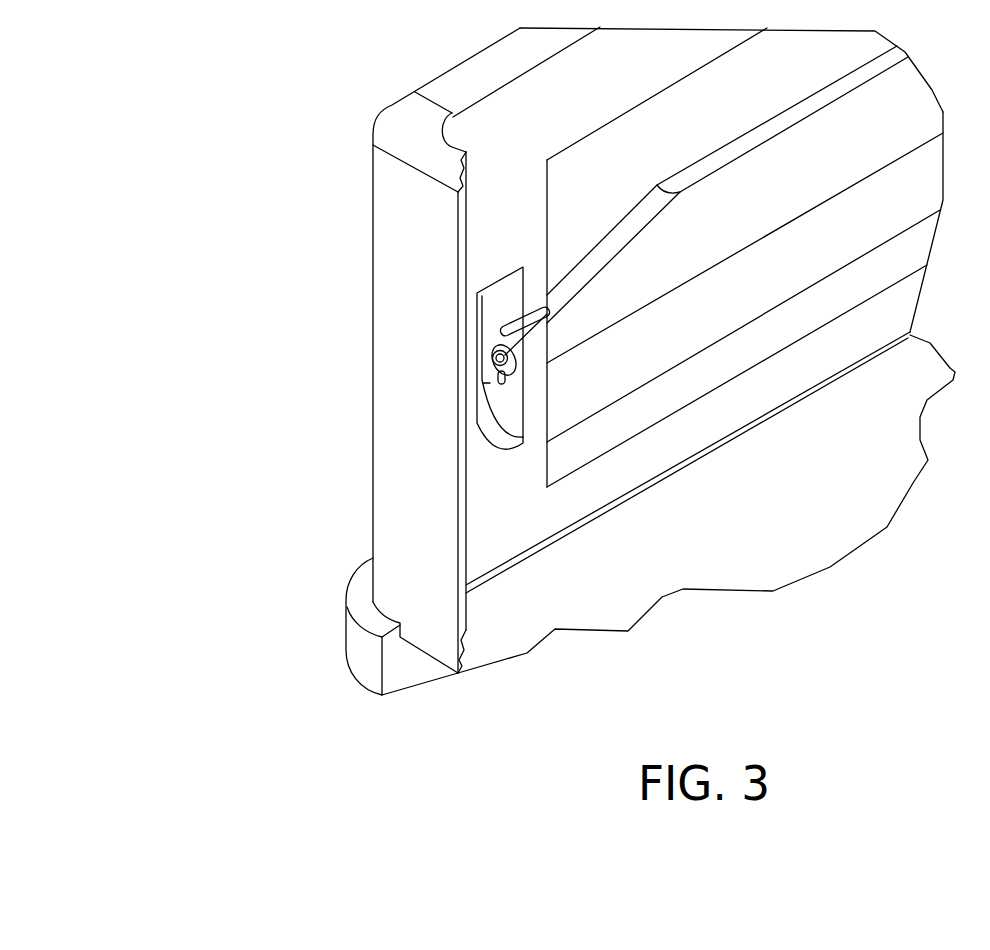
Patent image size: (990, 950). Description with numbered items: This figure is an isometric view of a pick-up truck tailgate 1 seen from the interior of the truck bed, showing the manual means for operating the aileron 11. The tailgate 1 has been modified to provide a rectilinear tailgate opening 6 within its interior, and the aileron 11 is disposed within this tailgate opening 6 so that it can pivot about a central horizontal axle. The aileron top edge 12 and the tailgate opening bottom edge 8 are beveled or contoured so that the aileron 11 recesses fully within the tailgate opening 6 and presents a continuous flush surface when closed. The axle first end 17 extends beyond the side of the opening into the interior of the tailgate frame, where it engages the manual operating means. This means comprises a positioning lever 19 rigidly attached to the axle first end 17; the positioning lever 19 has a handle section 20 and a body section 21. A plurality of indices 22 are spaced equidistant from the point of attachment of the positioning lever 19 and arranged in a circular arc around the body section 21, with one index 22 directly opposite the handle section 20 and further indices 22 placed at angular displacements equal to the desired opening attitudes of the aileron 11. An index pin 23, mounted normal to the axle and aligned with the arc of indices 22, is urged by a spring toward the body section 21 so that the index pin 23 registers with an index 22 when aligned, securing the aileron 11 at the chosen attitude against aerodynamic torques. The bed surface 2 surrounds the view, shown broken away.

The tailgate 1 is at (503, 175).
The base plate 2 is at (856, 507).
The tailgate opening 6 is at (694, 145).
The tailgate opening bottom edge 8 is at (613, 427).
The aileron 11 is at (780, 214).
The aileron top edge 12 is at (693, 172).
The axle first end 17 is at (493, 360).
The positioning lever 19 is at (491, 333).
The handle section 20 is at (478, 293).
The body section 21 is at (495, 347).
The indices 22 is at (498, 375).
The index pin 23 is at (488, 387).